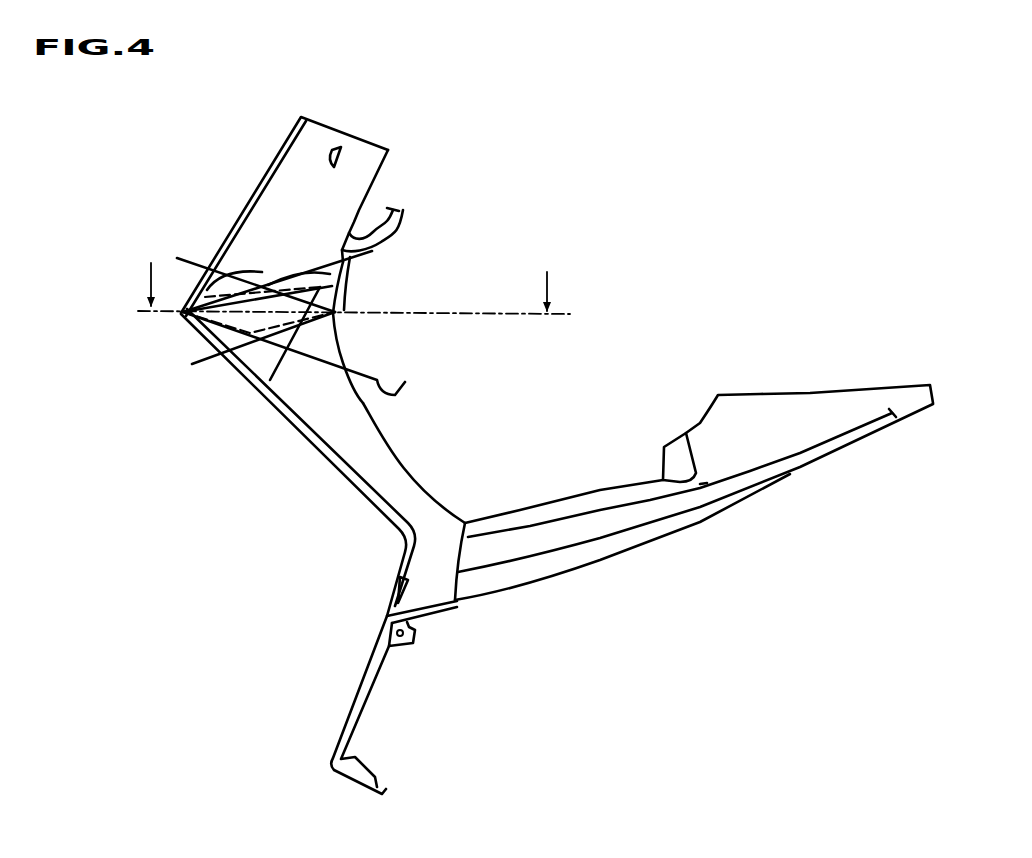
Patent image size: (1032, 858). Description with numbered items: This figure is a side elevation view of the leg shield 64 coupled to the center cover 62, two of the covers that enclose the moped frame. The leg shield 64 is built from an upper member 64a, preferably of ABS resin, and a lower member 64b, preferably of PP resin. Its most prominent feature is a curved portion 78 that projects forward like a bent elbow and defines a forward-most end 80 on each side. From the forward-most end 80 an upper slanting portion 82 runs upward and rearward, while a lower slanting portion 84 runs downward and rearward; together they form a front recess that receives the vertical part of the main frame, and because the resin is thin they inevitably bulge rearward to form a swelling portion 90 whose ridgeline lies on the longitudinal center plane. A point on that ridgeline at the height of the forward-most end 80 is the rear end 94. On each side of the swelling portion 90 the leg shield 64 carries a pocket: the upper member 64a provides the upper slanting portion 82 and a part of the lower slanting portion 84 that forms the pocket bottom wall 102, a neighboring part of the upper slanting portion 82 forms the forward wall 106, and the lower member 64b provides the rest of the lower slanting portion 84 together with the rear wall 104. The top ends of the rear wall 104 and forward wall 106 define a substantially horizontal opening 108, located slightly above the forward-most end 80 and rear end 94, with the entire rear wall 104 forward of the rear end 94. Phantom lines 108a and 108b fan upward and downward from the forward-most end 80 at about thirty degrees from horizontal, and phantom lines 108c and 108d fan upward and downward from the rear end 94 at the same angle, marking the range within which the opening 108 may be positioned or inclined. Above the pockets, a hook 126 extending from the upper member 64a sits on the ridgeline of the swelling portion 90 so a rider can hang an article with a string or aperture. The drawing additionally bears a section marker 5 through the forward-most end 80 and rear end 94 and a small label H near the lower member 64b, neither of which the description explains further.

The center cover 62 is at (589, 474).
The leg shield 64 is at (289, 445).
The upper member 64a is at (279, 168).
The lower member 64b is at (312, 463).
The curved portion 78 is at (175, 360).
The forward-most end 80 is at (184, 336).
The upper slanting portion 82 is at (250, 223).
The lower slanting portion 84 is at (299, 419).
The swelling portion 90 is at (390, 444).
The rear end 94 is at (340, 310).
The bottom wall 102 is at (190, 368).
The rear wall 104 is at (340, 353).
The forward wall 106 is at (178, 285).
The opening 108 is at (348, 282).
The phantom line 108a is at (372, 251).
The phantom line 108b is at (395, 395).
The phantom line 108c is at (223, 370).
The phantom line 108d is at (199, 280).
The hook 126 is at (400, 216).
The section line 5- 5 is at (354, 274).
The hole H is at (398, 645).